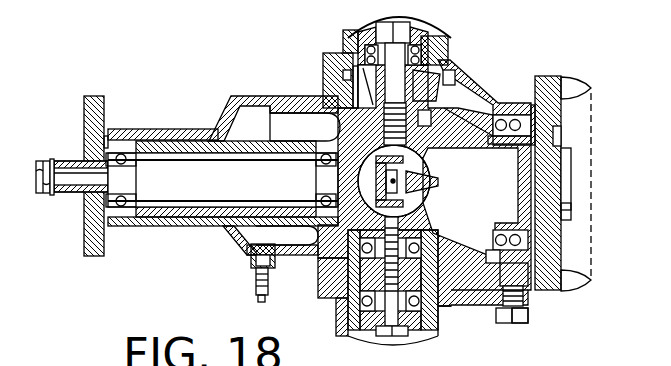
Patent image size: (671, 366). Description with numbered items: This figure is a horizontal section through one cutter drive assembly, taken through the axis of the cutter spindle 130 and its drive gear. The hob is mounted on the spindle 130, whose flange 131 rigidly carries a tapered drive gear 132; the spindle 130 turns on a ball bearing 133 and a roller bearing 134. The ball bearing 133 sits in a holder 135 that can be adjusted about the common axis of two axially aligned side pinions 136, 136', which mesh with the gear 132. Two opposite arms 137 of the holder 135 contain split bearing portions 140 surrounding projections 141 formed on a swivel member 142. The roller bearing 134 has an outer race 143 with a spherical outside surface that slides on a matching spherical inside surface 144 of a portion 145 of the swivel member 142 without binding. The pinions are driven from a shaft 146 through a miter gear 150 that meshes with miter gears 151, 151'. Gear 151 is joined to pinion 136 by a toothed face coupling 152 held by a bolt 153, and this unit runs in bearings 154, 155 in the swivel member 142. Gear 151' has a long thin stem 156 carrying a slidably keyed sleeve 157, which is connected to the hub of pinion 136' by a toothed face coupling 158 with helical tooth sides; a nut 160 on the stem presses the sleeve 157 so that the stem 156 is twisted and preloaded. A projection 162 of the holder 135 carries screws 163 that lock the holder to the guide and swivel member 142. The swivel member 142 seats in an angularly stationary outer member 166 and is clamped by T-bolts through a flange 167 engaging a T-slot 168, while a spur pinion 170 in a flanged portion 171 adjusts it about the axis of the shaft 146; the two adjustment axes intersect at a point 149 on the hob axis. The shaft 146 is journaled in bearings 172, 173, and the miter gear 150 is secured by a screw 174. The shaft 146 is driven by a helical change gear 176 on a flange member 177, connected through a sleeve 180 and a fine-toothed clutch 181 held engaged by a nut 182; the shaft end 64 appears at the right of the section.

The spindle 130 is at (553, 126).
The flange 131 is at (446, 115).
The tapered drive gear 132 is at (442, 61).
The ball bearing 133 is at (555, 117).
The roller bearing 134 is at (400, 179).
The holder 135 is at (496, 93).
The side pinion 136 is at (318, 87).
The side pinion 136' is at (322, 317).
The arms 137 is at (440, 34).
The split bearing portions 140 is at (336, 40).
The projections 141 is at (348, 324).
The swivel member 142 is at (204, 128).
The outer race 143 is at (402, 161).
The spherical inside surface 144 is at (422, 191).
The portion 145 is at (440, 181).
The shaft 146 is at (192, 170).
The point 149 is at (330, 173).
The miter gear 150 is at (287, 232).
The miter gear 151 is at (305, 125).
The miter gear 151' is at (597, 212).
The toothed face coupling 152 is at (445, 98).
The bolt 153 is at (330, 63).
The bearing 154 is at (440, 50).
The bearing 155 is at (356, 53).
The stem 156 is at (509, 330).
The sleeve 157 is at (402, 333).
The toothed face coupling 158 is at (452, 300).
The nut 160 is at (512, 266).
The projection 162 is at (518, 293).
The screws 163 is at (514, 314).
The outer member 166 is at (215, 112).
The flange 167 is at (250, 274).
The T-slot 168 is at (326, 282).
The spur pinion 170 is at (228, 228).
The flanged portion 171 is at (242, 258).
The bearing 172 is at (263, 133).
The bearing 173 is at (116, 219).
The screw 174 is at (258, 188).
The helical change gear 176 is at (86, 88).
The flange member 177 is at (80, 136).
The sleeve 180 is at (56, 188).
The fine-toothed clutch 181 is at (70, 190).
The nut 182 is at (33, 180).
The shaft end 64 is at (552, 72).